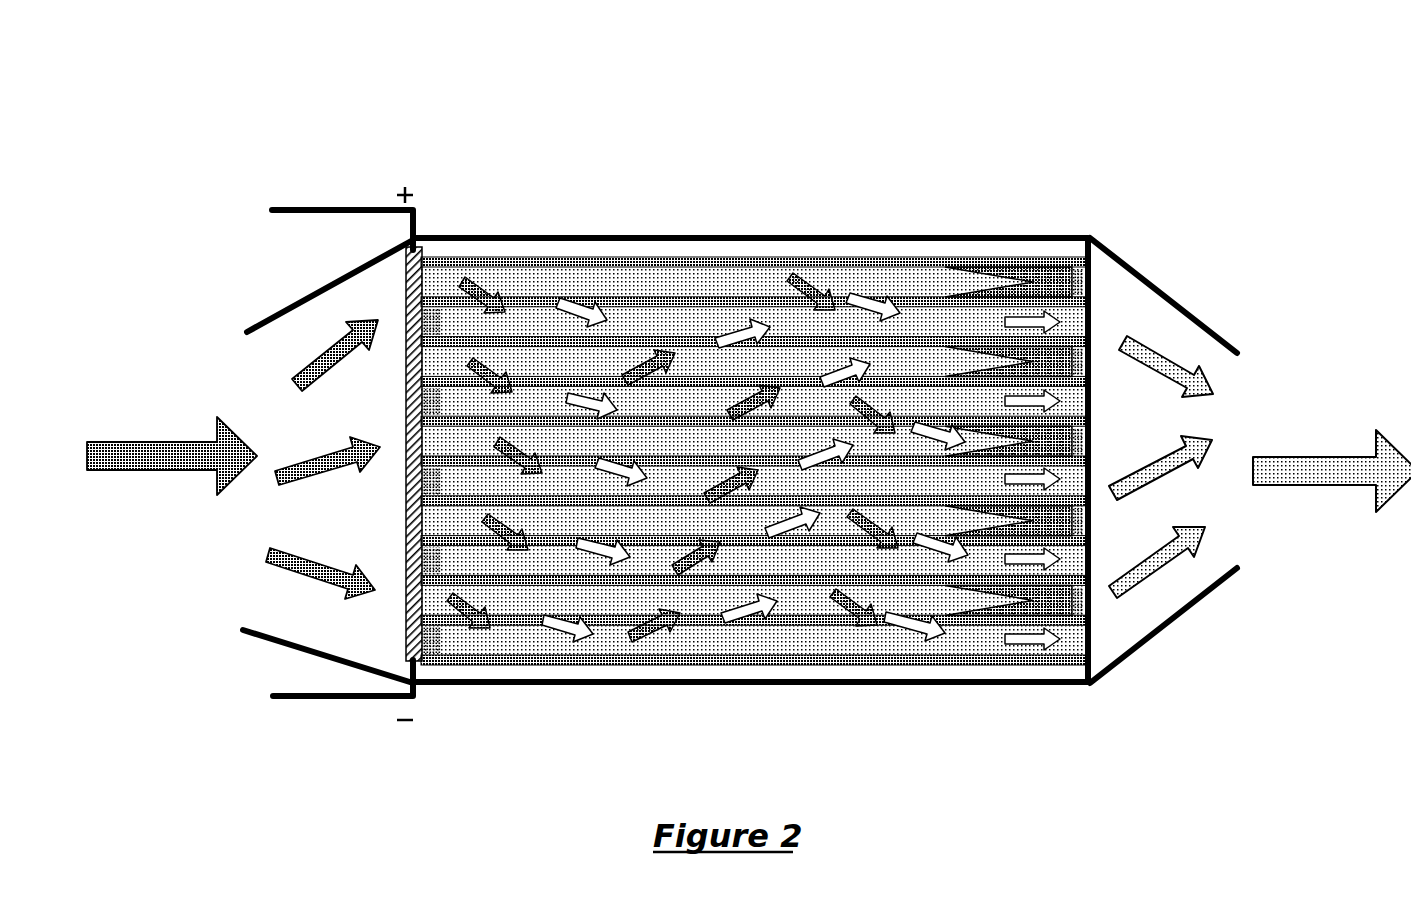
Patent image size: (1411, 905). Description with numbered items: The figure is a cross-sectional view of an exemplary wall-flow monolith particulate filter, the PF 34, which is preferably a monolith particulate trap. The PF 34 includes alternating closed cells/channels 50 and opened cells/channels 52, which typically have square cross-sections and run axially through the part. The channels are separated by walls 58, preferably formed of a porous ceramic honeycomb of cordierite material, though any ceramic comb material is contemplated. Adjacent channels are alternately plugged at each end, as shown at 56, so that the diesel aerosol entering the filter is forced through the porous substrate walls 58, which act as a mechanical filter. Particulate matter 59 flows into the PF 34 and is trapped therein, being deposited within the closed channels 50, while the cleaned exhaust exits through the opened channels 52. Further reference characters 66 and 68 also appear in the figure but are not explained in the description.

The particulate filter 34 is at (729, 122).
The closed cells/channels 50 is at (927, 358).
The opened cells/channels 52 is at (808, 555).
The plugs 56 is at (413, 487).
The walls 58 is at (715, 302).
The particulate matter 59 is at (1058, 268).
The positive electrical lead 66 is at (325, 208).
The negative electrical lead 68 is at (363, 700).